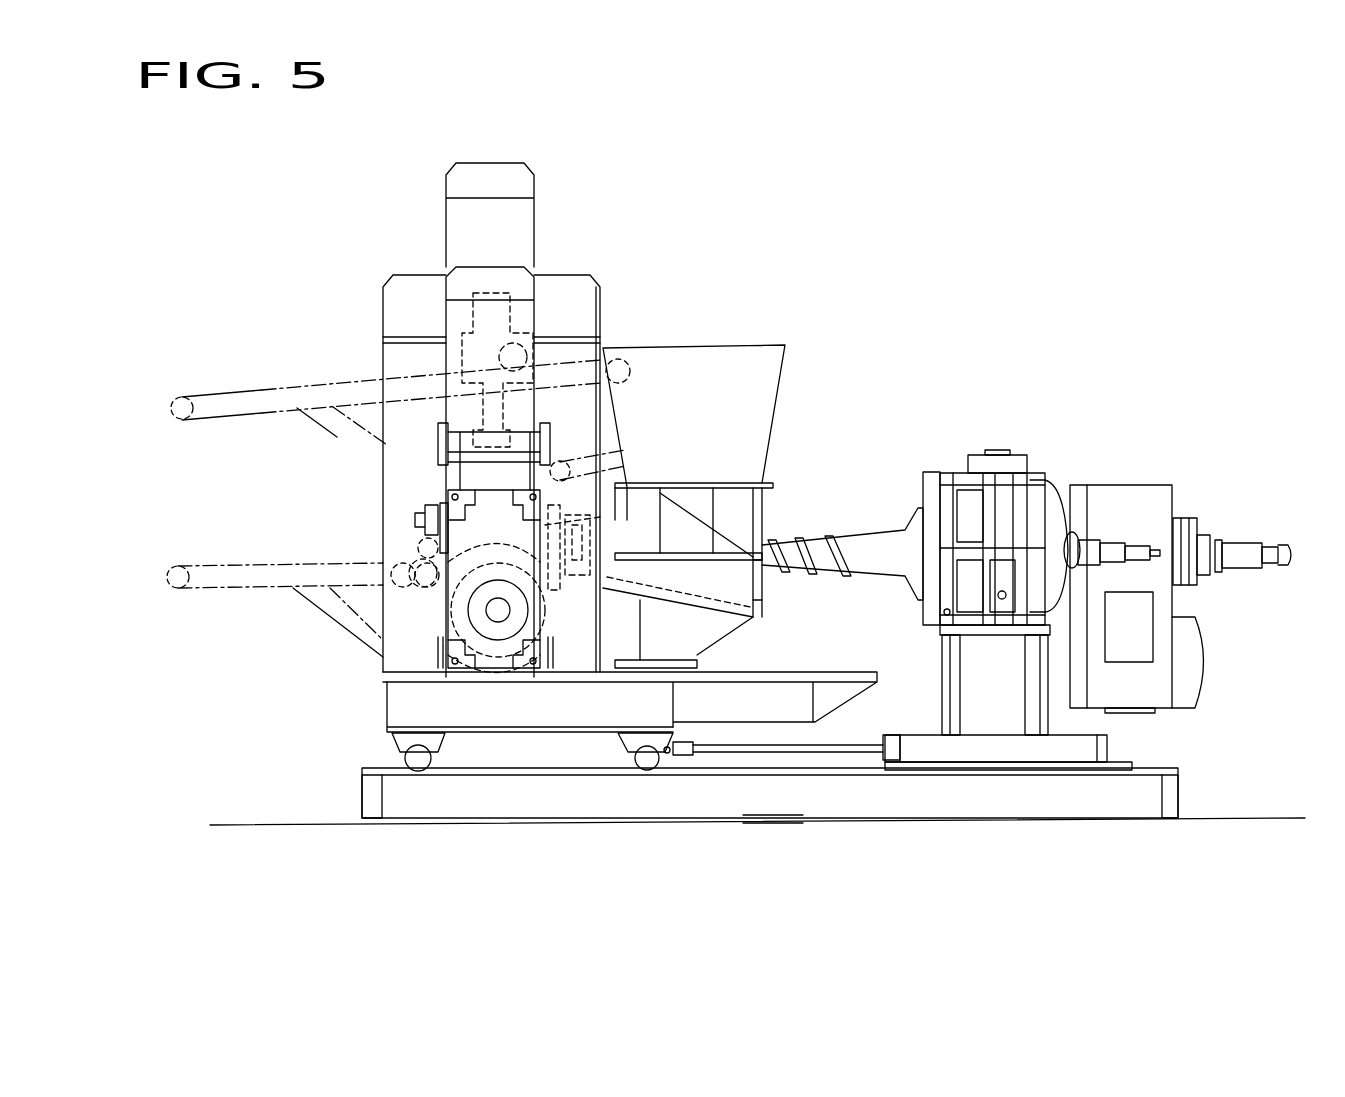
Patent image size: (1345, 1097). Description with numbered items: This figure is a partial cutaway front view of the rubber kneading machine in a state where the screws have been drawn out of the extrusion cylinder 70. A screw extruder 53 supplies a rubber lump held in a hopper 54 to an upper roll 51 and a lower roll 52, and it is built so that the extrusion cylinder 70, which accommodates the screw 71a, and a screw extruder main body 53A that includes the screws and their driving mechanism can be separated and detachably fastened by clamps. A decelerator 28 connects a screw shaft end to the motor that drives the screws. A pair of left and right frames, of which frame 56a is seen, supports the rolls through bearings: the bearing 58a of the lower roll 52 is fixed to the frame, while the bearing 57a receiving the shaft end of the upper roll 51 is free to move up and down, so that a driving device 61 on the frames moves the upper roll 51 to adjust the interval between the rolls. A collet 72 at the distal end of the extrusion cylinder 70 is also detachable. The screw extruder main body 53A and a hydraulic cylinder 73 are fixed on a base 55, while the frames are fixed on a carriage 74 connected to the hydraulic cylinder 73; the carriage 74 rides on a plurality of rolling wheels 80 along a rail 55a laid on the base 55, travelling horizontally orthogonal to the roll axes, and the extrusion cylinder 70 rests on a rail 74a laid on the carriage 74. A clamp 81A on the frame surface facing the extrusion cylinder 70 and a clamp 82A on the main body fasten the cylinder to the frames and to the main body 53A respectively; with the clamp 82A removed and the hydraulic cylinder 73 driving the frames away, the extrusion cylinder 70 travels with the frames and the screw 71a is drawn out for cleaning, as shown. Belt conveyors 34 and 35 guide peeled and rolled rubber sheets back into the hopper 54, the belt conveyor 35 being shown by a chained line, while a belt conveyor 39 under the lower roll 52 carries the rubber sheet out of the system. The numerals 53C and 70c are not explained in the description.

The decelerator 28 is at (1155, 495).
The belt conveyor 34 is at (590, 465).
The belt conveyor 35 is at (225, 395).
The belt conveyor for taking out 39 is at (250, 565).
The upper roll 51 is at (433, 537).
The lower roll 52 is at (443, 623).
The screw extruder 53 is at (763, 465).
The screw extruder main body 53A is at (1042, 478).
The gear box 53C is at (945, 472).
The hopper 54 is at (728, 347).
The base 55 is at (485, 800).
The rail 55a is at (553, 775).
The frame 56a is at (407, 282).
The bearing 57a is at (443, 453).
The bearing 58a is at (448, 587).
The driving device 61 is at (510, 320).
The extrusion cylinder 70 is at (735, 505).
The trough end 70c is at (760, 515).
The screw 71a is at (875, 547).
The collet 72 is at (622, 503).
The hydraulic cylinder 73 is at (1073, 748).
The carriage 74 is at (605, 710).
The rail 74a is at (785, 668).
The rolling wheel 80 is at (413, 765).
The clamp 81A is at (628, 680).
The clamp 82A is at (975, 470).